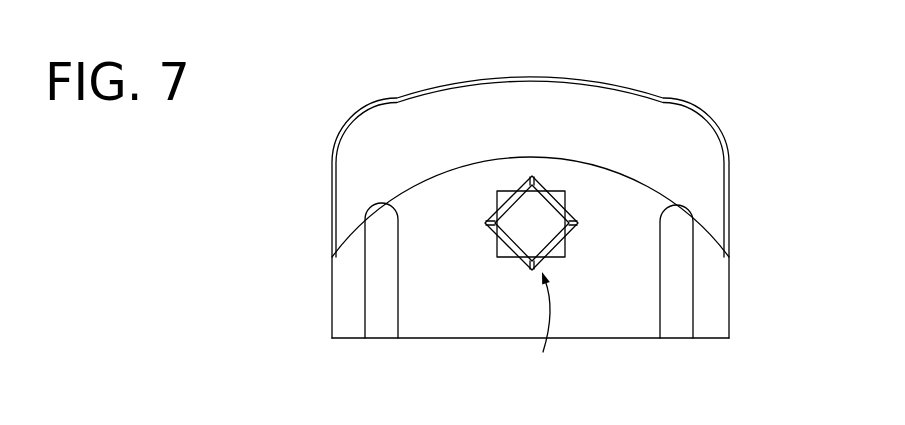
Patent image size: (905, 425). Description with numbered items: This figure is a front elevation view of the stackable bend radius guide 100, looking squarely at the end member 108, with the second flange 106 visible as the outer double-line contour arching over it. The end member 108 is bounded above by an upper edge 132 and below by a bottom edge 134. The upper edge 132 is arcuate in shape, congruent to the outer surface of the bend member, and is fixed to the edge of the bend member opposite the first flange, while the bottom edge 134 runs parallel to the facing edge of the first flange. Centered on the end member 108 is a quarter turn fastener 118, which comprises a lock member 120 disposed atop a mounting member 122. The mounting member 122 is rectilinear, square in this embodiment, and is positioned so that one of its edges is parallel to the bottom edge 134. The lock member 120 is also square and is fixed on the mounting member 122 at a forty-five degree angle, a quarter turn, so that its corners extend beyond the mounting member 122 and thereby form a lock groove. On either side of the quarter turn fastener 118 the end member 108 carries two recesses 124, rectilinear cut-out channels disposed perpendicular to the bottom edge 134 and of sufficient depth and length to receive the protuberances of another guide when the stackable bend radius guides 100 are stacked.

The stackable bend radius guide 100 is at (397, 58).
The second flange 106 is at (678, 107).
The end member 108 is at (740, 307).
The quarter turn fastener 118 is at (538, 330).
The lock member 120 is at (527, 218).
The mounting member 122 is at (550, 193).
The recesses 124 is at (383, 307).
The upper edge 132 is at (410, 183).
The bottom edge 134 is at (467, 338).